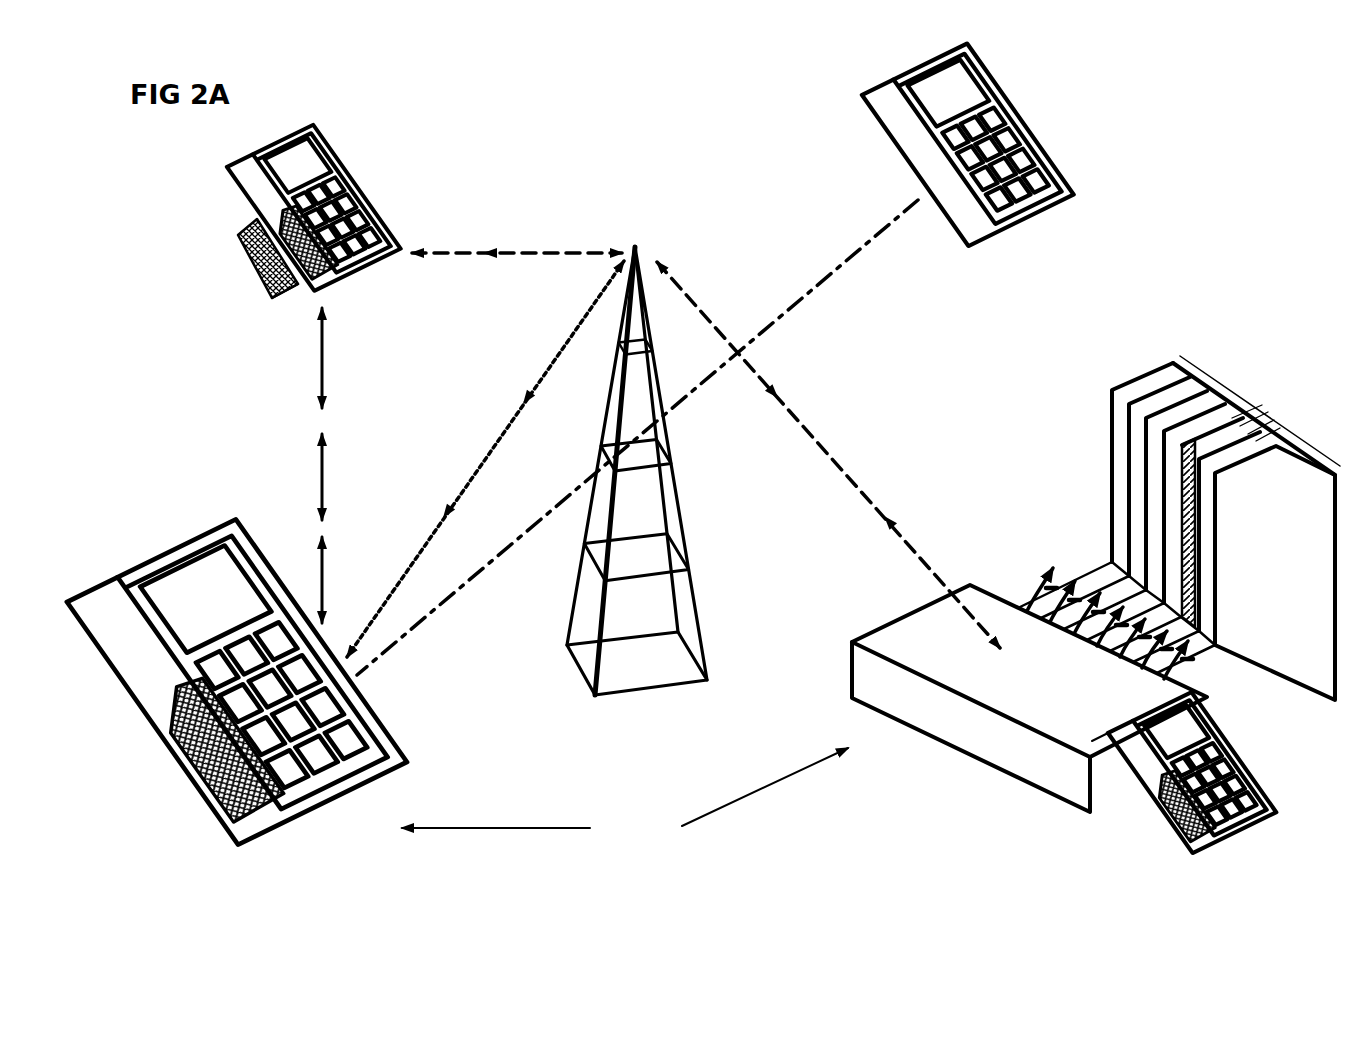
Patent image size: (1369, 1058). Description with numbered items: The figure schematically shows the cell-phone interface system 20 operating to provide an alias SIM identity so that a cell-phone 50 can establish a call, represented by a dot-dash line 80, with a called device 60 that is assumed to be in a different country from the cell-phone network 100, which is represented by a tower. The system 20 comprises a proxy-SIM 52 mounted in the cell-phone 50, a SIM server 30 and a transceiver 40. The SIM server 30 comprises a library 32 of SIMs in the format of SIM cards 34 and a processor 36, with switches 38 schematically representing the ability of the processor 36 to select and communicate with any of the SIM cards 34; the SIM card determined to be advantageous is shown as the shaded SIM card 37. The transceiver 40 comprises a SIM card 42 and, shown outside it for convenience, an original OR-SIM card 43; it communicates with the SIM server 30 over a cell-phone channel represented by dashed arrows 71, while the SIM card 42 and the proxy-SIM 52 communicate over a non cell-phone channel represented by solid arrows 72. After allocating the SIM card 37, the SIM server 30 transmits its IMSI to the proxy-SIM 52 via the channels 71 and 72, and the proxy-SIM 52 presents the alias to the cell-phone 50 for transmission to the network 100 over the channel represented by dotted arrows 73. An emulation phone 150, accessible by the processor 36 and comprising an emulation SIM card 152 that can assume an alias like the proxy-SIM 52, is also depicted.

The cell-phone interface system 20 is at (625, 796).
The SIM server 30 is at (1338, 353).
The library 32 is at (1190, 368).
The SIM cards 34 is at (1128, 480).
The processor 36 is at (932, 659).
The SIM card 37 is at (1182, 537).
The switches 38 is at (1028, 597).
The transceiver 40 is at (354, 182).
The SIM card 42 is at (254, 222).
The OR-SIM card 43 is at (273, 300).
The cell-phone 50 is at (202, 538).
The proxy-SIM 52 is at (250, 812).
The called device 60 is at (1031, 140).
The dashed arrows 71 is at (730, 347).
The solid arrows 72 is at (333, 490).
The dotted arrows 73 is at (515, 438).
The dot-dash line 80 is at (878, 230).
The cell-phone network 100 is at (690, 583).
The emulation phone 150 is at (1123, 770).
The emulation SIM card 152 is at (1190, 853).